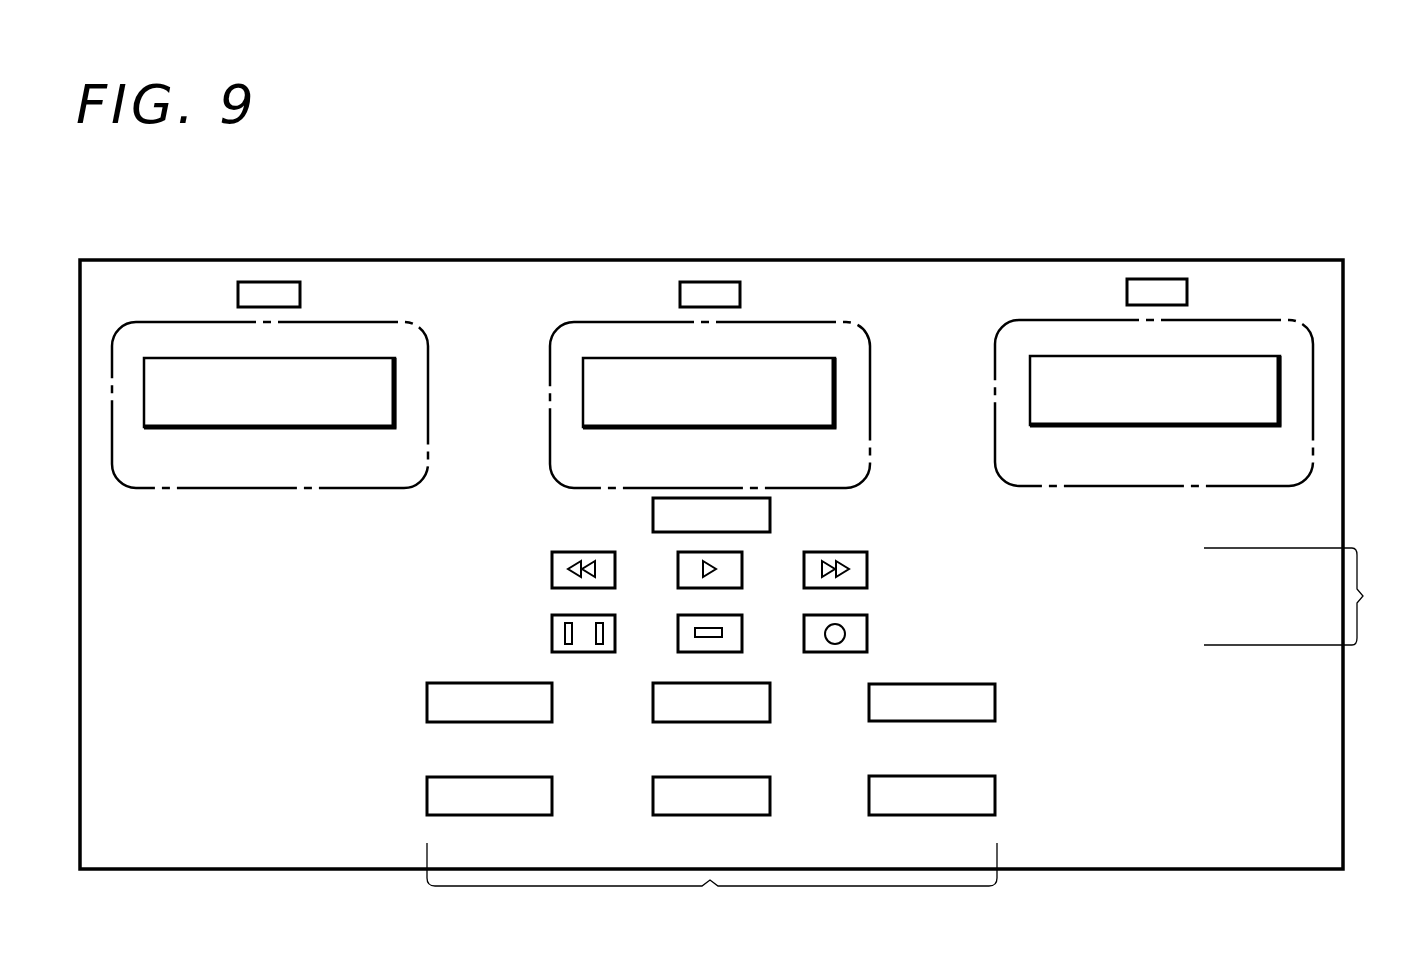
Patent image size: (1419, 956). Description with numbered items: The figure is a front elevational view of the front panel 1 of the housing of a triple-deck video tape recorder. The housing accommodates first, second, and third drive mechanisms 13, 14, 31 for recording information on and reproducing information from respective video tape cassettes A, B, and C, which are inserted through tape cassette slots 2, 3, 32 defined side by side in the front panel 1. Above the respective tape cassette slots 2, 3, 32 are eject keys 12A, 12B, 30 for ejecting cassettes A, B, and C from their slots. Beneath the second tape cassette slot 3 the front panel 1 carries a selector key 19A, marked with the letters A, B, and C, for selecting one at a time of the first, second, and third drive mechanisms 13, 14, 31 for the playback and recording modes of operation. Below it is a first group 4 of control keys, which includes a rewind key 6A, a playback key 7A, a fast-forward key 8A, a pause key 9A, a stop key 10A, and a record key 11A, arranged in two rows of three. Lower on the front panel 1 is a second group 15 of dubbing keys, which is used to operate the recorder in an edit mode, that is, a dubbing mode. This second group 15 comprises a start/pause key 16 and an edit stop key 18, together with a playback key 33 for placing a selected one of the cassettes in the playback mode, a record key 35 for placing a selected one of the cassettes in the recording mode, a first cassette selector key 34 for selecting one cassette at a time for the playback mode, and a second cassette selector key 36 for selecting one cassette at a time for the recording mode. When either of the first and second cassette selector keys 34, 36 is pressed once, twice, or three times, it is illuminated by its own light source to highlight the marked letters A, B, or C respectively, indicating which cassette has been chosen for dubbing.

The front panel 1 is at (1013, 258).
The tape cassette slot 2 is at (160, 358).
The tape cassette slot 3 is at (595, 358).
The tape cassette slot 32 is at (1280, 388).
The first drive mechanism 13 is at (383, 322).
The second drive mechanism 14 is at (835, 322).
The third drive mechanism 31 is at (1248, 320).
The eject key 12A is at (271, 282).
The eject key 12B is at (710, 282).
The eject key 30 is at (1152, 279).
The selector key 19A is at (770, 515).
The rewind key 6A is at (550, 568).
The playback key 7A is at (676, 568).
The fast-forward key 8A is at (868, 572).
The pause key 9A is at (550, 632).
The stop key 10A is at (676, 630).
The record key 11A is at (868, 636).
The first group of control keys 4 is at (1296, 596).
The playback key 33 is at (425, 700).
The start/pause key 16 is at (650, 700).
The record key 35 is at (998, 702).
The first cassette selector key 34 is at (425, 789).
The edit stop key 18 is at (650, 789).
The second cassette selector key 36 is at (998, 792).
The second group of dubbing keys 15 is at (712, 886).